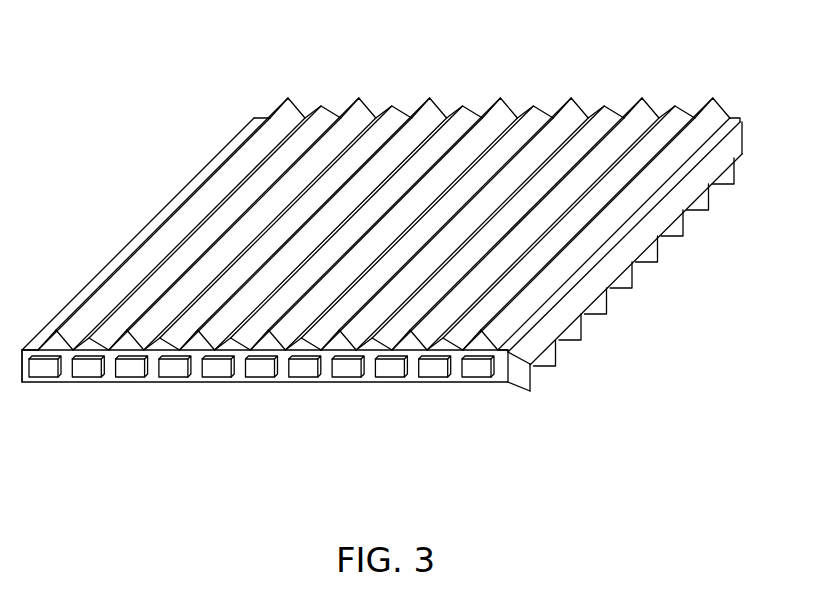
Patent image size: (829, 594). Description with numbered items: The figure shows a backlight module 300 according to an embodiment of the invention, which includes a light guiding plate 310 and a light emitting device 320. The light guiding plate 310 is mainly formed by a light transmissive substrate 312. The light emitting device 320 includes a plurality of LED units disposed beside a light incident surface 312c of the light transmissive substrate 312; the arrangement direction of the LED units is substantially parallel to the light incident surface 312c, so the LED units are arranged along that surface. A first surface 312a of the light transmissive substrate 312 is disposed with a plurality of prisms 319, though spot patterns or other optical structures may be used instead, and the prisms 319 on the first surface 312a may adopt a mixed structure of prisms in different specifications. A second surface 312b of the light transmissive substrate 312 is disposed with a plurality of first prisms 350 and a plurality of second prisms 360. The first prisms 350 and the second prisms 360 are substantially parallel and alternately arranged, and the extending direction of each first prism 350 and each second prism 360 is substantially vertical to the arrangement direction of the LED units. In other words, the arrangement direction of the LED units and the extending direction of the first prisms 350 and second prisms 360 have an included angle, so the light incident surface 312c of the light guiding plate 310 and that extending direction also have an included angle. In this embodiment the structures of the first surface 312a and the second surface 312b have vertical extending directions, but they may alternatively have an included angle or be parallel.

The backlight module 300 is at (414, 258).
The light guiding plate 310 is at (747, 88).
The light transmissive substrate 312 is at (738, 130).
The first surface 312a is at (625, 256).
The second surface 312b is at (376, 199).
The light incident surface 312c is at (271, 386).
The prisms 319 is at (633, 272).
The light emitting device 320 is at (261, 425).
The first prisms 350 is at (577, 115).
The second prisms 360 is at (540, 113).